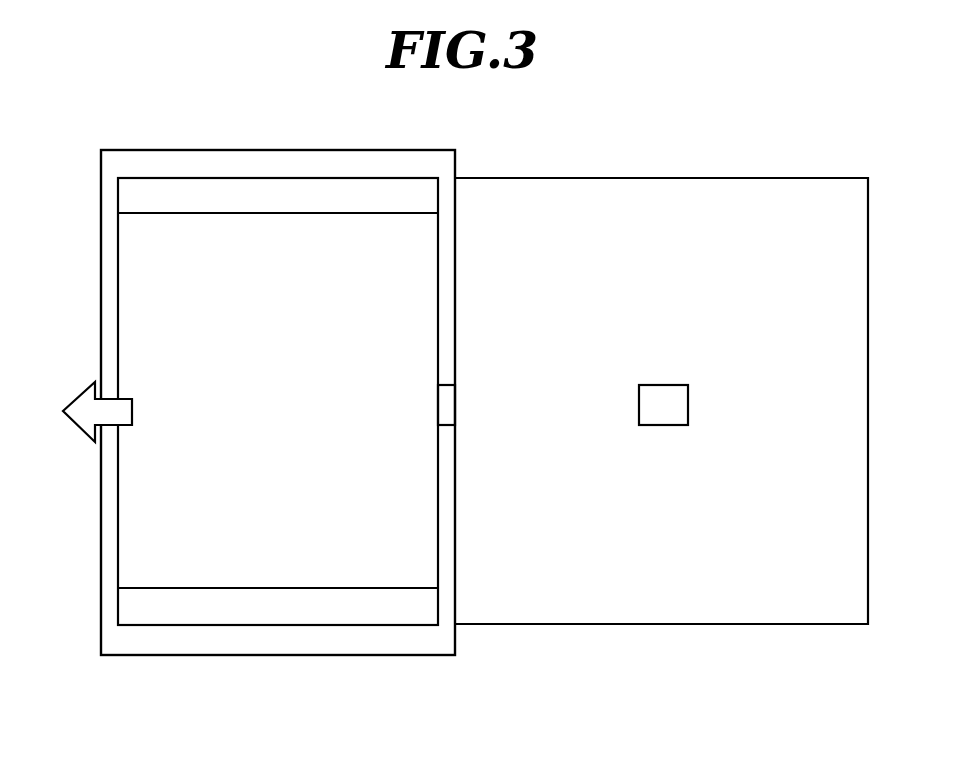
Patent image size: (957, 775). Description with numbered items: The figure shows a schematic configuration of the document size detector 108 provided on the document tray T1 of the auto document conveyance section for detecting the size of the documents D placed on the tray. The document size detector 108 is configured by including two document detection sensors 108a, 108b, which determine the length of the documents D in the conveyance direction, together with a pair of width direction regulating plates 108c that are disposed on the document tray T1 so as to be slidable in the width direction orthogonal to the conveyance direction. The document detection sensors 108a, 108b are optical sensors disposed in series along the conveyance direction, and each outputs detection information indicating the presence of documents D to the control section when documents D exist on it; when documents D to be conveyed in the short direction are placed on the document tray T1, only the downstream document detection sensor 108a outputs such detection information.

The document size detector 108 is at (570, 136).
The document detection sensor 108a is at (455, 427).
The document detection sensor 108b is at (664, 414).
The width direction regulating plates 108c is at (353, 177).
The document tray T1 is at (819, 188).
The documents D is at (132, 555).